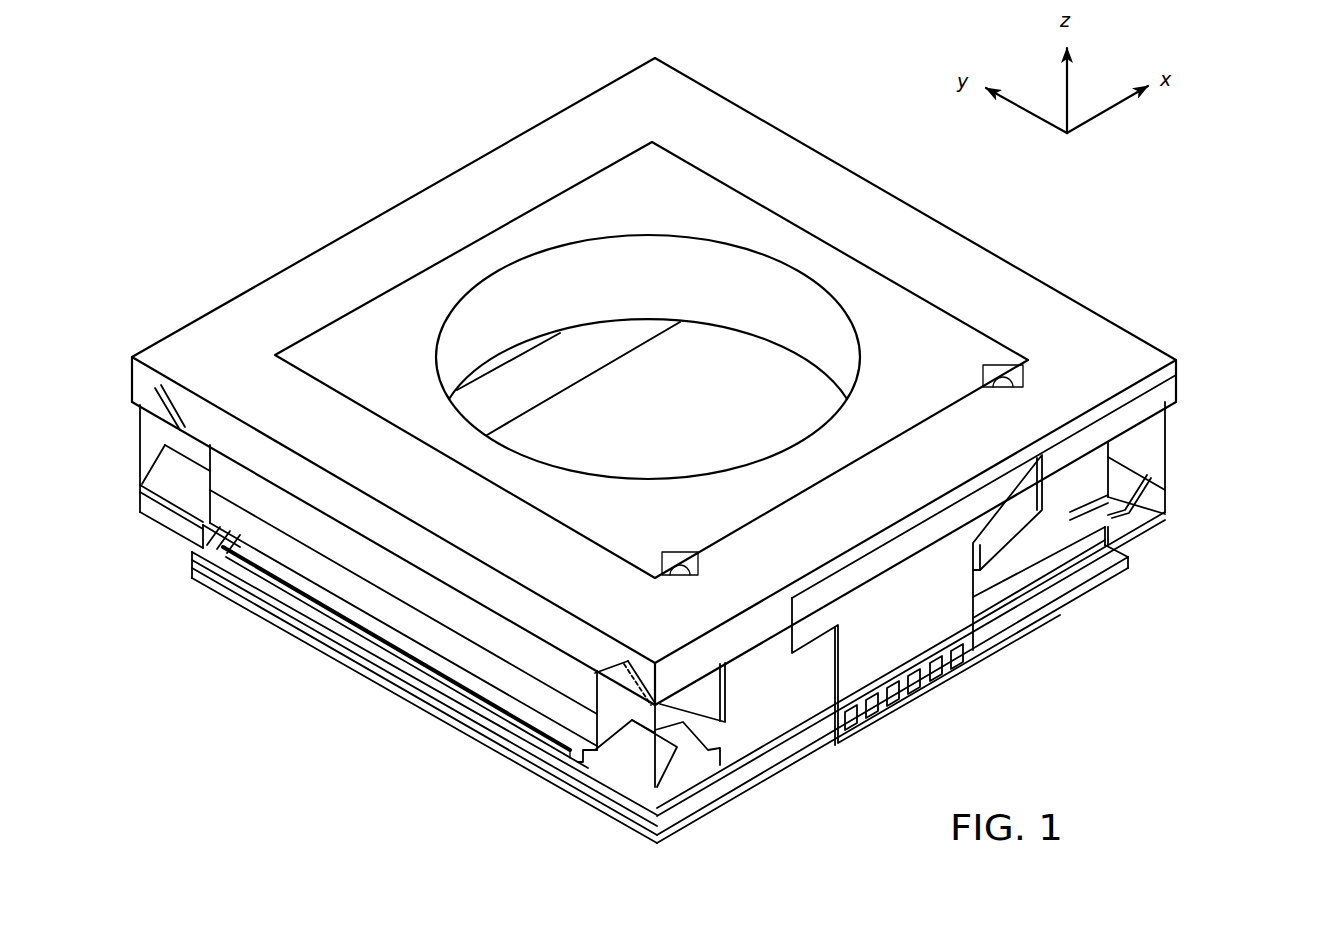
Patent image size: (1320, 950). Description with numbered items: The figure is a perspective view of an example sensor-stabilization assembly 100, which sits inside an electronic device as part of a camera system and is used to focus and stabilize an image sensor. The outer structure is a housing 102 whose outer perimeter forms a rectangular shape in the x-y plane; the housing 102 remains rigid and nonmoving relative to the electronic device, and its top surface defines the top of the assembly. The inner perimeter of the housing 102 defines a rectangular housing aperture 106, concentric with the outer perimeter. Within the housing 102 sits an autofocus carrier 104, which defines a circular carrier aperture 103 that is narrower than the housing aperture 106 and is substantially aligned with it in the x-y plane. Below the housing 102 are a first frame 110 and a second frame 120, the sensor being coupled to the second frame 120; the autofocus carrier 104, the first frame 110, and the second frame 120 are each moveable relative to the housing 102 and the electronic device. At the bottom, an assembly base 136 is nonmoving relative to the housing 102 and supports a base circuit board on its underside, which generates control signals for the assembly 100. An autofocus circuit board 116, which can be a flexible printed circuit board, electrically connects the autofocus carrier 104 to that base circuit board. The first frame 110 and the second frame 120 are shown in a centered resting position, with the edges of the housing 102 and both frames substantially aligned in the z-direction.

The sensor-stabilization assembly 100 is at (357, 80).
The housing 102 is at (1076, 350).
The carrier aperture 103 is at (668, 395).
The autofocus carrier 104 is at (367, 360).
The housing aperture 106 is at (457, 255).
The first frame 110 is at (267, 538).
The autofocus circuit board 116 is at (875, 655).
The second frame 120 is at (1160, 535).
The assembly base 136 is at (1091, 602).